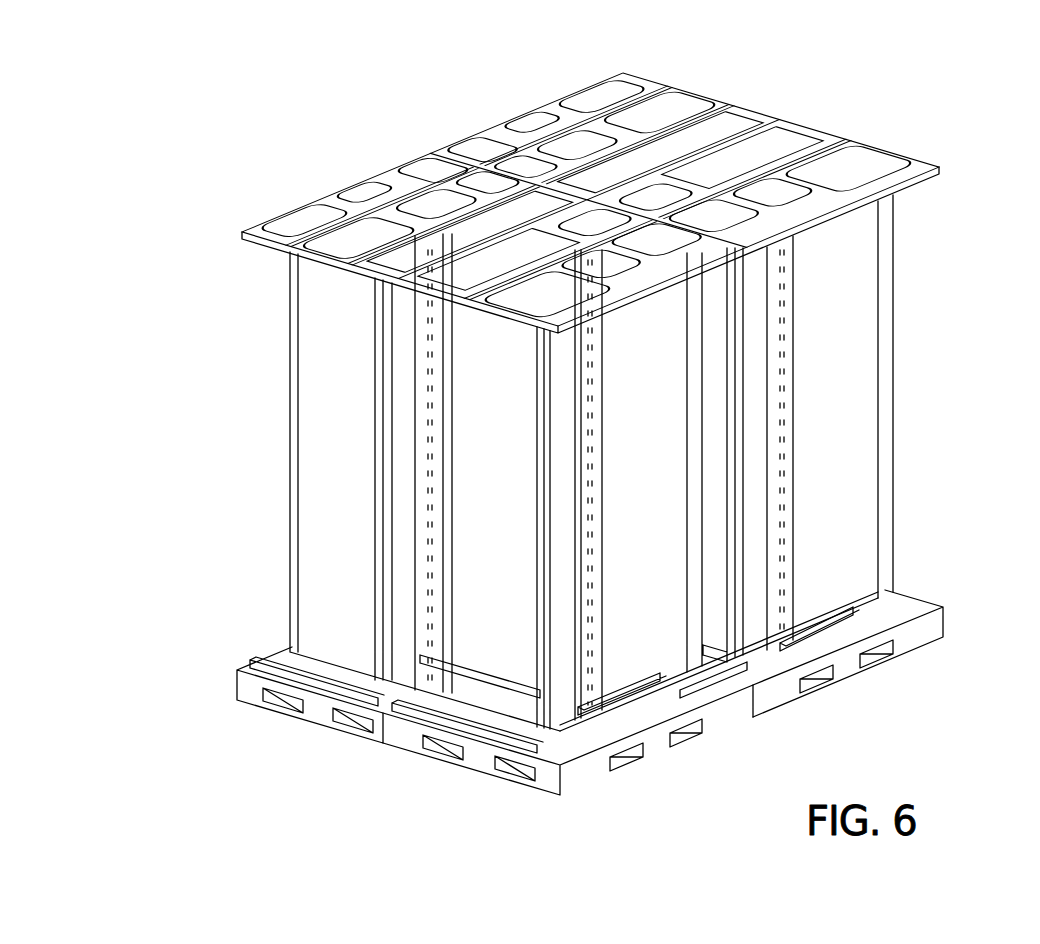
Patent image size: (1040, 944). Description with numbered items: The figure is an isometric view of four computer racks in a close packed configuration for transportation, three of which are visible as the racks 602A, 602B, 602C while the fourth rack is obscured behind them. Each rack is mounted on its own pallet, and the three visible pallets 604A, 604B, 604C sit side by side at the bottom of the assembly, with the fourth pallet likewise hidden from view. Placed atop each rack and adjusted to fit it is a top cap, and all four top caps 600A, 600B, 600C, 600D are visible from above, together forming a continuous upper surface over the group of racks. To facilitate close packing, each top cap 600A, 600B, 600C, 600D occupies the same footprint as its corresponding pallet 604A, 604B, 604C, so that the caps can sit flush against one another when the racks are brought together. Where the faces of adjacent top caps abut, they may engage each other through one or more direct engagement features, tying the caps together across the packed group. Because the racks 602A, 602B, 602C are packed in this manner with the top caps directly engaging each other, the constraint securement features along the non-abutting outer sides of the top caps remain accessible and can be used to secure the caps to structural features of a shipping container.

The top cap 600A is at (387, 212).
The top cap 600B is at (577, 265).
The top cap 600C is at (773, 175).
The top cap 600D is at (580, 133).
The rack 602A is at (323, 430).
The rack 602B is at (507, 655).
The rack 602C is at (840, 355).
The pallet 604A is at (253, 695).
The pallet 604B is at (723, 717).
The pallet 604C is at (913, 643).